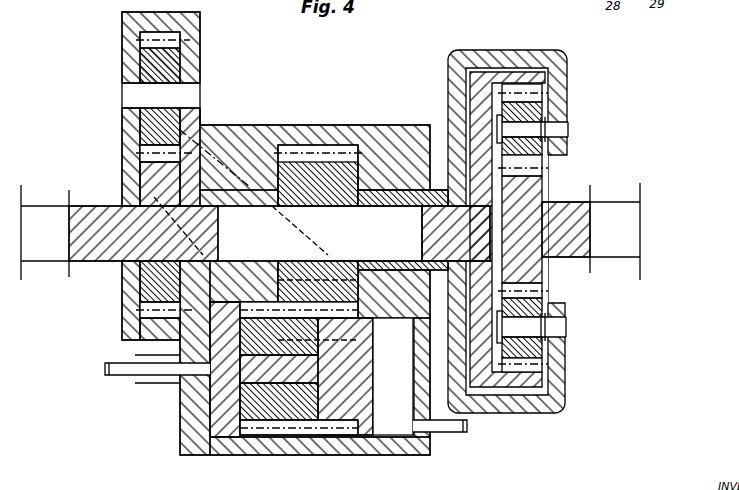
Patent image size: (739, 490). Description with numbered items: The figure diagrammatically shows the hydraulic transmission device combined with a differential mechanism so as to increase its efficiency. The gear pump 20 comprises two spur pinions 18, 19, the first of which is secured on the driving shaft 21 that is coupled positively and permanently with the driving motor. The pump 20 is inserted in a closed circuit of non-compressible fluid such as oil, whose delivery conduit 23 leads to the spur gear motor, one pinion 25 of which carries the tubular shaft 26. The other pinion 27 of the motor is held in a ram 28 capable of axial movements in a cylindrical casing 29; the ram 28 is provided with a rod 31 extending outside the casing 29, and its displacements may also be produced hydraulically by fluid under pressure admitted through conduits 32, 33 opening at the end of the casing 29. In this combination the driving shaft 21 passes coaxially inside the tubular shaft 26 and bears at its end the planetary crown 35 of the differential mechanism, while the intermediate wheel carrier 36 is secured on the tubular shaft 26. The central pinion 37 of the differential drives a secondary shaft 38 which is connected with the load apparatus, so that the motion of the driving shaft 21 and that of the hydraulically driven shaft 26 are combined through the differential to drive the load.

The spur pinion 18 is at (150, 181).
The spur pinion 19 is at (152, 63).
The gear pump 20 is at (147, 153).
The driving shaft 21 is at (53, 213).
The delivery conduit 23 is at (218, 157).
The pinion 25 is at (308, 170).
The tubular shaft 26 is at (396, 200).
The pinion 27 is at (245, 410).
The ram 28 is at (350, 425).
The cylindrical casing 29 is at (400, 383).
The rod 31 is at (105, 369).
The conduit 32 is at (455, 432).
The conduit 33 is at (173, 383).
The planetary crown 35 is at (478, 112).
The intermediate wheel carrier 36 is at (509, 56).
The central pinion 37 is at (543, 188).
The secondary shaft 38 is at (603, 215).